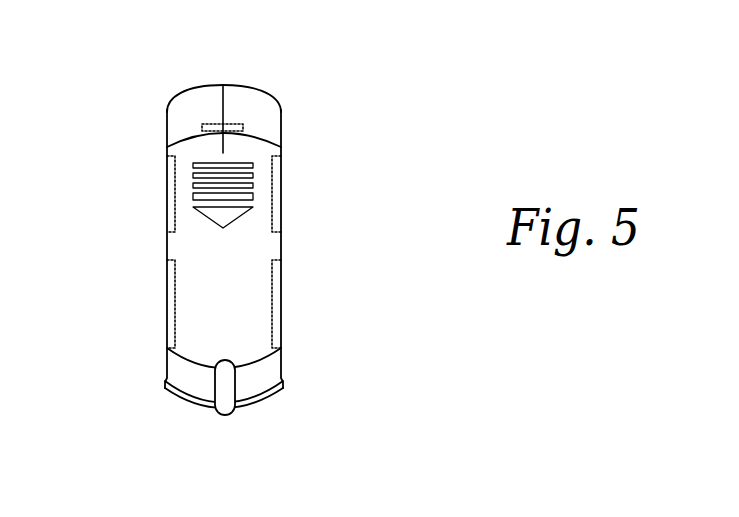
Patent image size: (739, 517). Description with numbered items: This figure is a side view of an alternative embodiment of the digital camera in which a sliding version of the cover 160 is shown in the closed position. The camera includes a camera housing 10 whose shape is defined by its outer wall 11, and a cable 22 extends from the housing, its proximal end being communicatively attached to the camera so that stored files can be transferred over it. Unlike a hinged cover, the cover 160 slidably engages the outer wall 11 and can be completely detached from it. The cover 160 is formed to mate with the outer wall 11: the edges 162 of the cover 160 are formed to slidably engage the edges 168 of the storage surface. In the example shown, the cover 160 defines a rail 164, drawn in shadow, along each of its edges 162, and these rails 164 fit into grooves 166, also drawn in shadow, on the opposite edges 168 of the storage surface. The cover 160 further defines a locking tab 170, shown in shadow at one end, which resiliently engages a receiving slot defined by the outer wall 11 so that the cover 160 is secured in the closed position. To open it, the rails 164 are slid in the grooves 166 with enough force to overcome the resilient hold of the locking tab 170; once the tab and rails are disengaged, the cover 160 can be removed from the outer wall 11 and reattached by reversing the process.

The camera housing 10 is at (198, 71).
The outer wall 11 is at (260, 90).
The cable 22 is at (225, 418).
The cover 160 is at (258, 266).
The edges of the cover 162 is at (167, 230).
The rail 164 is at (167, 185).
The grooves 166 is at (283, 167).
The edges of the storage surface 168 is at (167, 148).
The locking tab 170 is at (245, 126).